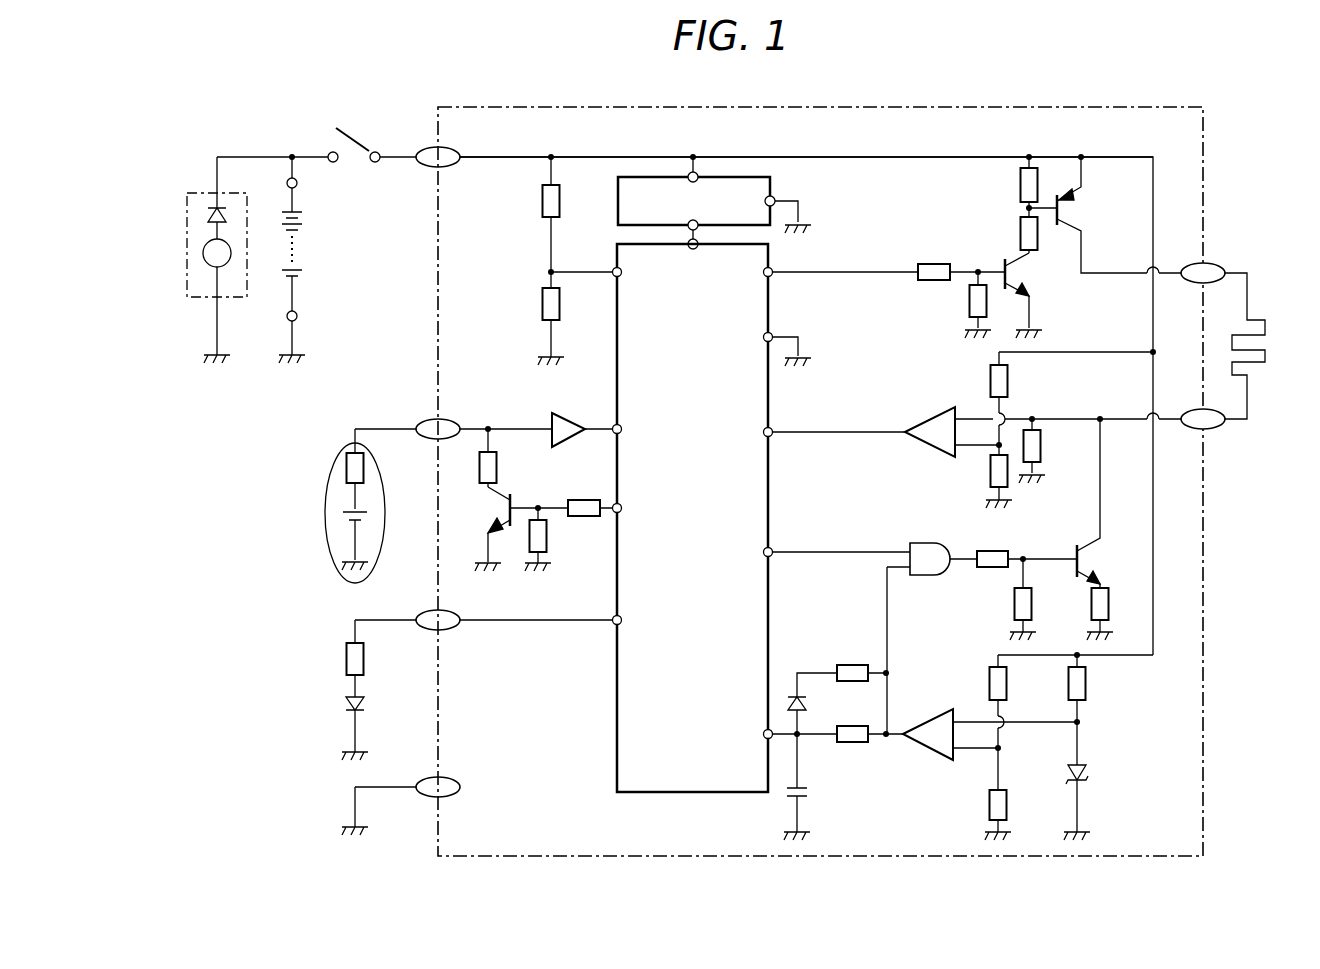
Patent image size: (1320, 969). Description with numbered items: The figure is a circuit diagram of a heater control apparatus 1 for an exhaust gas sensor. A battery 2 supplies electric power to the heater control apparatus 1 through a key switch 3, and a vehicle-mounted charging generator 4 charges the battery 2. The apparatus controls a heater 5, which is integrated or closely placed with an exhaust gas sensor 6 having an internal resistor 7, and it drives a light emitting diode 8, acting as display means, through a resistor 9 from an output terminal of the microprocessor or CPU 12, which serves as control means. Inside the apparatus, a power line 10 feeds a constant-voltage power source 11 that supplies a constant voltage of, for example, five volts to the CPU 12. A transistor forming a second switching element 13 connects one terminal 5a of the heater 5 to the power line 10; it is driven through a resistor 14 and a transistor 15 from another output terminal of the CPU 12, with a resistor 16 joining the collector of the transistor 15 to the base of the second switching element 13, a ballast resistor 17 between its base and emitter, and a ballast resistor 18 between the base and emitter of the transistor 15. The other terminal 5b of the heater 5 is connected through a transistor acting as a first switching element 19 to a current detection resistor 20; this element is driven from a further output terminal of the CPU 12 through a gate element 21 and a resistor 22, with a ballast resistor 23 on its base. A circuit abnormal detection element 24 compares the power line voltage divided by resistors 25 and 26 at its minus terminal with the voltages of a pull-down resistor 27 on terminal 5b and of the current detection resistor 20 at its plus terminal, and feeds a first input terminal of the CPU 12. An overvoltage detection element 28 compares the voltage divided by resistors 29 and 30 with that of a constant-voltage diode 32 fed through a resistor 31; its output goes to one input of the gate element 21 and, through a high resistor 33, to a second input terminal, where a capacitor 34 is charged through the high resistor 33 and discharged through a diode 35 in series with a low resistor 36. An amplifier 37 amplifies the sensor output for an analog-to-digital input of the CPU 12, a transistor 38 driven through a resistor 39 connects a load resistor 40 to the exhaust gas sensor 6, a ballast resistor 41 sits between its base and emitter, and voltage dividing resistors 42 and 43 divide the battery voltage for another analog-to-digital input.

The heater control apparatus 1 is at (1007, 107).
The battery 2 is at (298, 272).
The key switch 3 is at (362, 146).
The charging generator 4 is at (193, 193).
The heater 5 is at (1249, 318).
The one terminal of the heater 5a is at (1193, 263).
The other terminal of the heater 5b is at (1193, 409).
The exhaust gas sensor 6 is at (386, 513).
The internal resistor 7 is at (345, 469).
The light emitting diode 8 is at (346, 700).
The resistor 9 is at (345, 659).
The power line 10 is at (880, 157).
The constant-voltage power source 11 is at (616, 200).
The microprocessor (CPU) 12 is at (616, 710).
The second switching element (transistor) 13 is at (1073, 212).
The resistor 14 is at (933, 263).
The transistor 15 is at (1020, 277).
The resistor 16 is at (1019, 234).
The ballast resistor 17 is at (1019, 186).
The ballast resistor 18 is at (968, 300).
The first switching element (transistor) 19 is at (1092, 562).
The current detection resistor 20 is at (1090, 604).
The gate element 21 is at (924, 542).
The resistor 22 is at (993, 550).
The ballast resistor 23 is at (1013, 604).
The circuit abnormal detection element 24 is at (930, 410).
The resistor 25 is at (1009, 380).
The resistor 26 is at (989, 471).
The pull-down resistor 27 is at (1042, 447).
The overvoltage detection element 28 is at (928, 712).
The resistor 29 is at (989, 683).
The resistor 30 is at (989, 803).
The resistor 31 is at (1087, 685).
The constant-voltage diode 32 is at (1087, 779).
The high resistor 33 is at (853, 725).
The capacitor 34 is at (810, 792).
The diode 35 is at (810, 706).
The low resistor 36 is at (853, 664).
The amplifier 37 is at (570, 413).
The transistor 38 is at (498, 507).
The resistor 39 is at (583, 499).
The load resistor 40 is at (499, 468).
The ballast resistor 41 is at (548, 535).
The voltage dividing resistor 42 is at (541, 200).
The voltage dividing resistor 43 is at (541, 303).